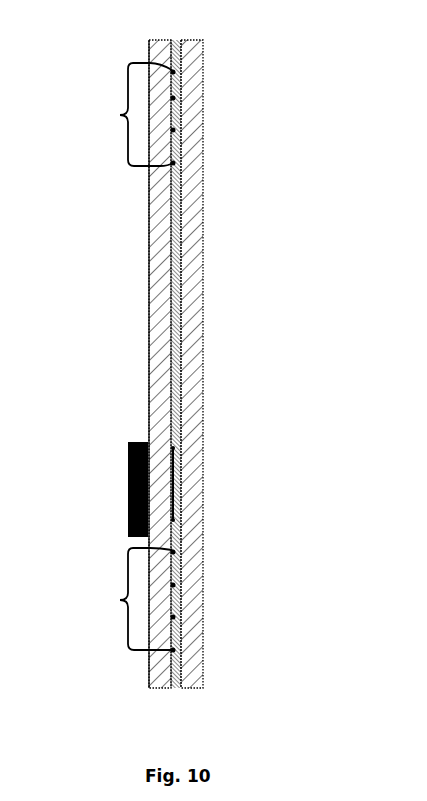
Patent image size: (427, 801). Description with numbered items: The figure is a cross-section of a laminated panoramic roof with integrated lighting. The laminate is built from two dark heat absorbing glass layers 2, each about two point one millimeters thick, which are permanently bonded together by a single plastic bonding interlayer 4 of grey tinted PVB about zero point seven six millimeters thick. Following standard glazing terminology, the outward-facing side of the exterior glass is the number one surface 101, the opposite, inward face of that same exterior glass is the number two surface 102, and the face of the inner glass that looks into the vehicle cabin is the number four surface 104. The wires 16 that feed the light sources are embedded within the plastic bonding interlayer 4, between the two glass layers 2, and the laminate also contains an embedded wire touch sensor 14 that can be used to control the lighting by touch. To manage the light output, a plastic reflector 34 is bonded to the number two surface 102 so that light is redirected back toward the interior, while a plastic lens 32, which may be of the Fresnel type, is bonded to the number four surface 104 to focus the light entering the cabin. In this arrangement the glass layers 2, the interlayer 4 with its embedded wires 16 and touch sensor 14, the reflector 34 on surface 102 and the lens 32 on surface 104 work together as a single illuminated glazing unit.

The glass 2 is at (145, 333).
The plastic bonding interlayer 4 is at (165, 292).
The touch sensor 14 is at (120, 115).
The wire 16 is at (176, 260).
The lens 32 is at (128, 487).
The reflector 34 is at (185, 485).
The number one surface 101 is at (208, 248).
The number two surface 102 is at (185, 190).
The number four surface 104 is at (143, 402).